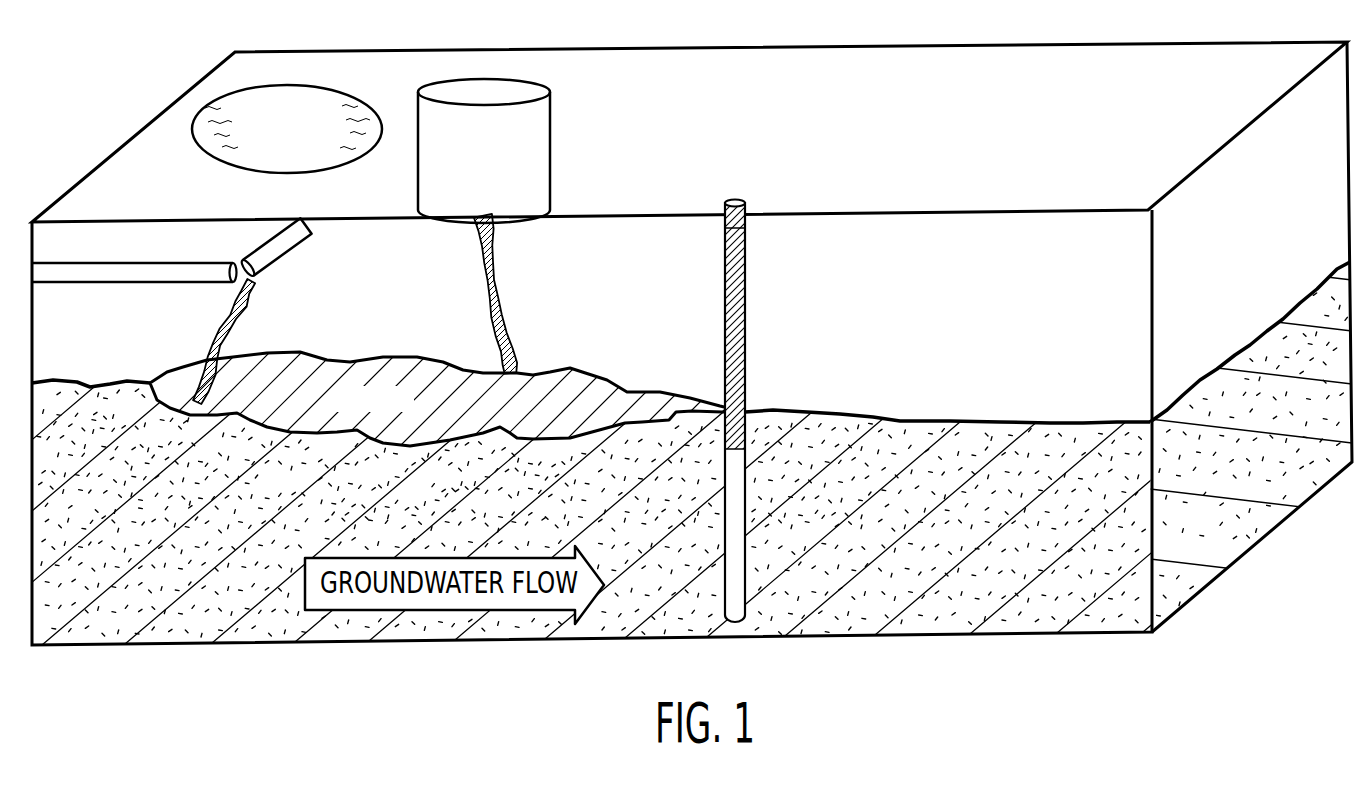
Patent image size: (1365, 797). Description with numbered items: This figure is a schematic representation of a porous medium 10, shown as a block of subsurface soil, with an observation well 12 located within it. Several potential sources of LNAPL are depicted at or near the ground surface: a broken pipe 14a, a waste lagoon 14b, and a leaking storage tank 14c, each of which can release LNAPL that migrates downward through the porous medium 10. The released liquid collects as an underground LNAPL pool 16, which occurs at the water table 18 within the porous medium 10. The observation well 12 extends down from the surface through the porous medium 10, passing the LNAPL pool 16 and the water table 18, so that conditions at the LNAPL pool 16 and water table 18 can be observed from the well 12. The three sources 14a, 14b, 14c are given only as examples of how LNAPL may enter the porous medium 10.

The porous medium 10 is at (858, 285).
The observation well 12 is at (747, 203).
The broken pipe 14a is at (258, 278).
The waste lagoon 14b is at (343, 88).
The leaking storage tank 14c is at (552, 175).
The underground LNAPL pool 16 is at (620, 388).
The water table 18 is at (1103, 420).